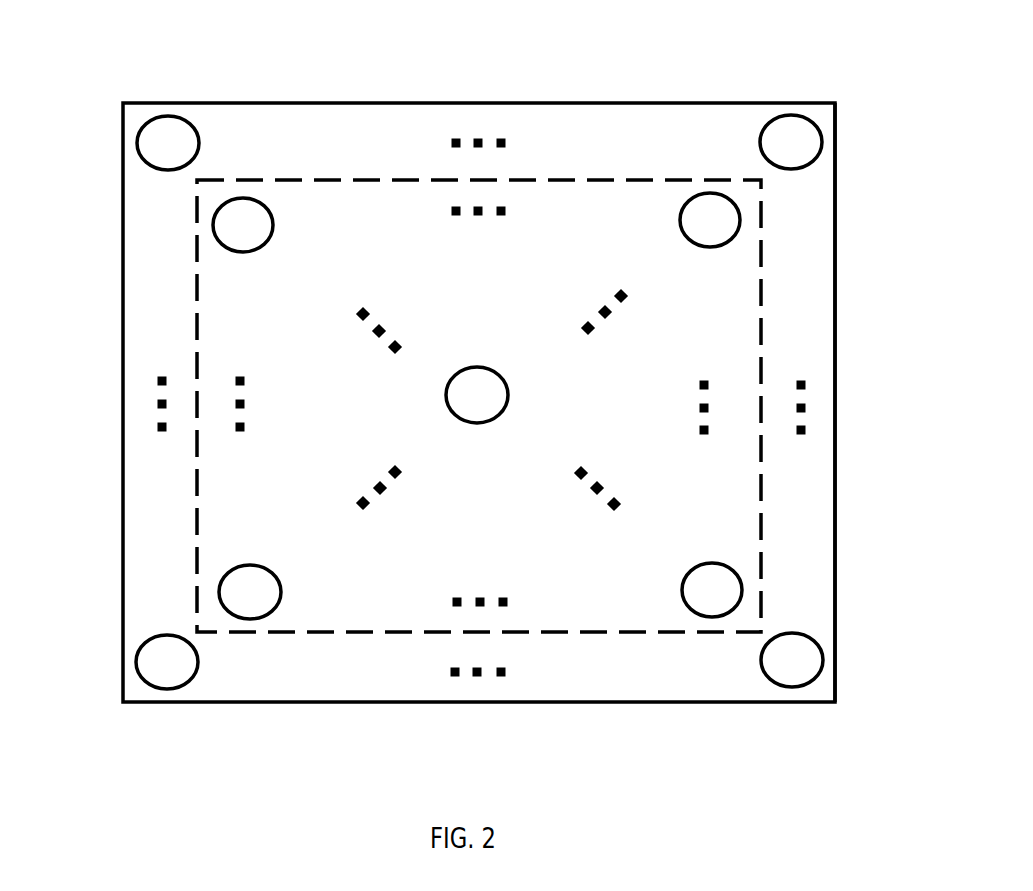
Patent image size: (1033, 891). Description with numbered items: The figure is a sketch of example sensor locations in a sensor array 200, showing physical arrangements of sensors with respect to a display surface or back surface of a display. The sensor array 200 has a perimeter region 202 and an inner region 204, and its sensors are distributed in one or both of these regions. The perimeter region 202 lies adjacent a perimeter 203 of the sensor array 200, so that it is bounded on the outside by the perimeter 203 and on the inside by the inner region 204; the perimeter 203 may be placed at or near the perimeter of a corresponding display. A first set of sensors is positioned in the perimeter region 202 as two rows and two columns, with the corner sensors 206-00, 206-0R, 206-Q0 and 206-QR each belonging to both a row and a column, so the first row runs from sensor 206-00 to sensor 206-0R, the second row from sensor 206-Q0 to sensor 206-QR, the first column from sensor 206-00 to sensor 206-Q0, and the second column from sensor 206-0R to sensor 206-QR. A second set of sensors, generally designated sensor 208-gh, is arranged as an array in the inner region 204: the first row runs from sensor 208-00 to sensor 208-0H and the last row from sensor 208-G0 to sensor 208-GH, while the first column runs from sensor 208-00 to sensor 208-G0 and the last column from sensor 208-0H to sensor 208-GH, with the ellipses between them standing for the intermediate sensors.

The sensor array 200 is at (58, 21).
The perimeter region 202 is at (812, 465).
The perimeter 203 is at (835, 203).
The inner region 204 is at (333, 208).
The sensor 206-00 is at (168, 137).
The sensor 206-0R is at (782, 133).
The sensor 206-Q0 is at (165, 672).
The sensor 206-QR is at (792, 667).
The sensor 208-00 is at (247, 232).
The sensor 208-0H is at (702, 220).
The sensor 208-G0 is at (252, 575).
The sensor 208-GH is at (698, 582).
The sensor 208-gh is at (490, 392).